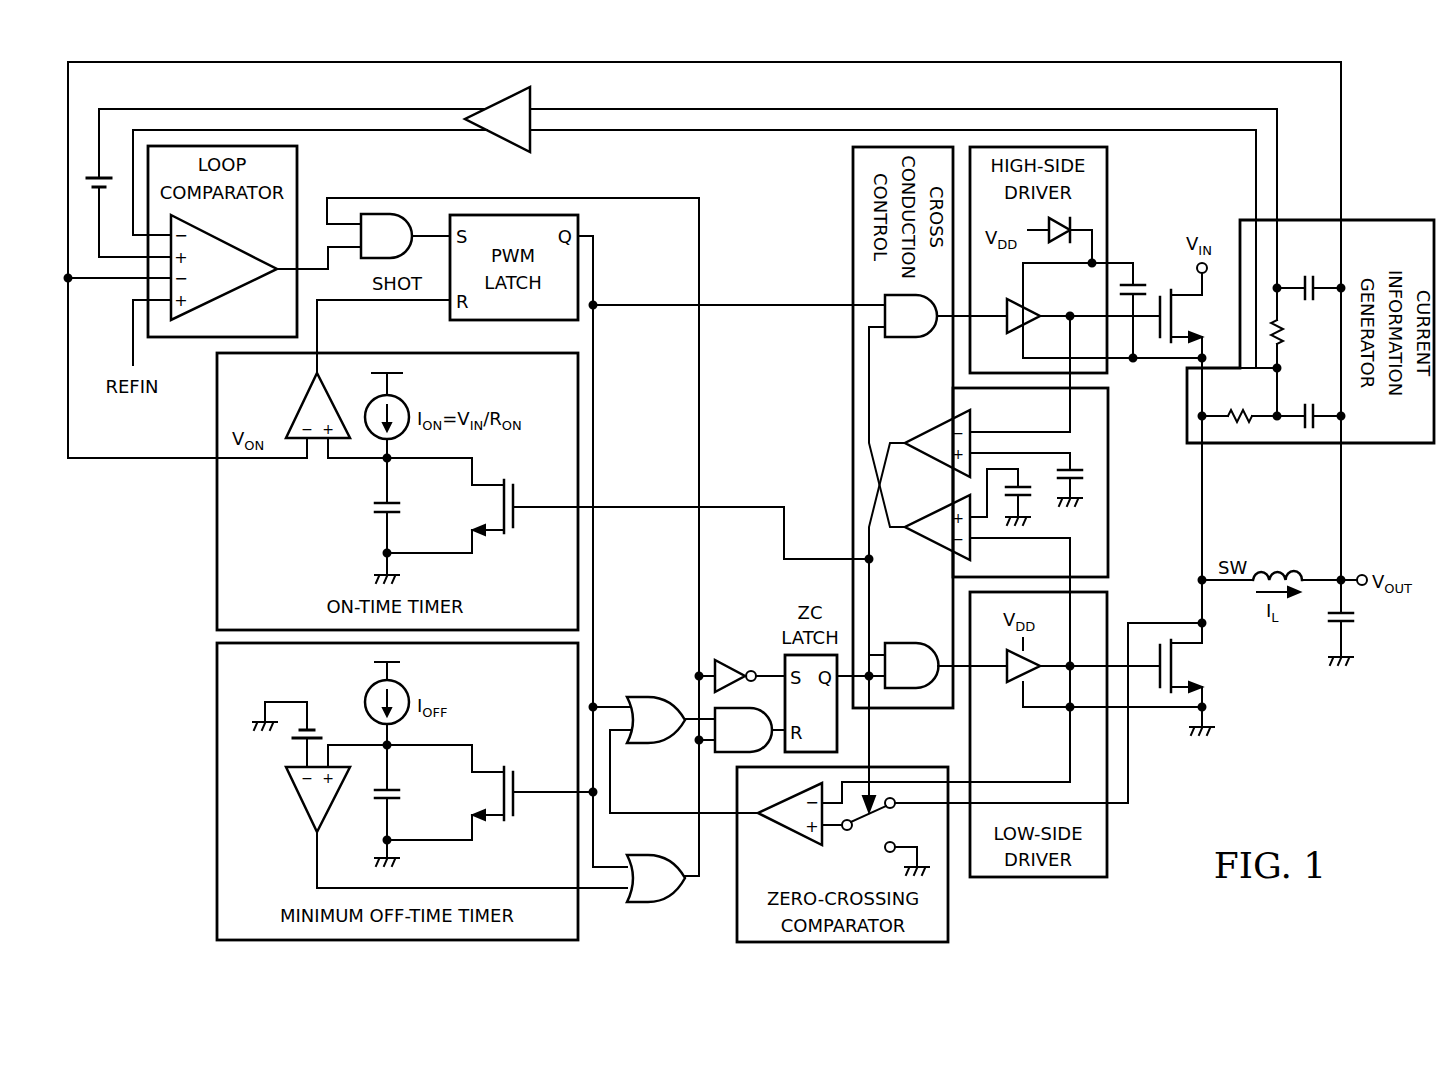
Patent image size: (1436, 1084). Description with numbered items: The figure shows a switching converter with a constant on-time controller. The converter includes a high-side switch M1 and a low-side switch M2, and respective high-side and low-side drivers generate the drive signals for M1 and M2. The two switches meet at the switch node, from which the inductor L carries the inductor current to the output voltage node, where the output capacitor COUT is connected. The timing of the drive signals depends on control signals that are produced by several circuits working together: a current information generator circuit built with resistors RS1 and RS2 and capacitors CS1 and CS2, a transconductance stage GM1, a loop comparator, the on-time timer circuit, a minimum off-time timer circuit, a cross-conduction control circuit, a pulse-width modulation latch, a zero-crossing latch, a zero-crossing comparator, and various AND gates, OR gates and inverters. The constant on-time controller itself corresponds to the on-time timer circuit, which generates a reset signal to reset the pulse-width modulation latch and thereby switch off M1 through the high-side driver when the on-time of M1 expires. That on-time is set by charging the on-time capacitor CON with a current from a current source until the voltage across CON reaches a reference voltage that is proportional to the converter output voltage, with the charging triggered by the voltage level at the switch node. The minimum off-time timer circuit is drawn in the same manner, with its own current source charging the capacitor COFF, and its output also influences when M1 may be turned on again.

The transconductance stage GM1 is at (497, 106).
The high-side switch M1 is at (1196, 307).
The low-side switch M2 is at (1197, 666).
The inductor L is at (1279, 560).
The capacitor Cs1 CS1 is at (1309, 402).
The capacitor Cs2 CS2 is at (1309, 273).
The resistor Rs1 RS1 is at (1239, 401).
The resistor Rs2 RS2 is at (1295, 368).
The output capacitor COUT is at (1363, 618).
The on-time capacitor CON is at (406, 505).
The off-time capacitor COFF is at (408, 792).